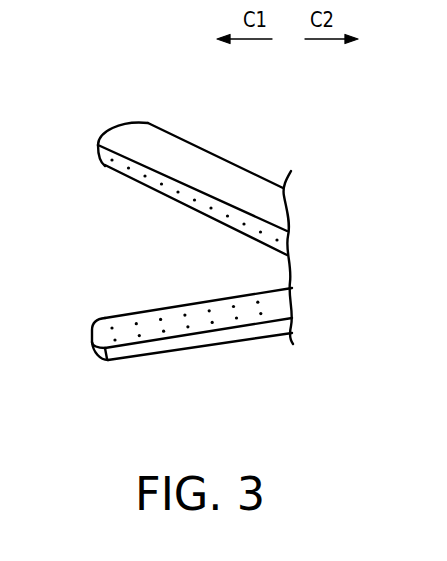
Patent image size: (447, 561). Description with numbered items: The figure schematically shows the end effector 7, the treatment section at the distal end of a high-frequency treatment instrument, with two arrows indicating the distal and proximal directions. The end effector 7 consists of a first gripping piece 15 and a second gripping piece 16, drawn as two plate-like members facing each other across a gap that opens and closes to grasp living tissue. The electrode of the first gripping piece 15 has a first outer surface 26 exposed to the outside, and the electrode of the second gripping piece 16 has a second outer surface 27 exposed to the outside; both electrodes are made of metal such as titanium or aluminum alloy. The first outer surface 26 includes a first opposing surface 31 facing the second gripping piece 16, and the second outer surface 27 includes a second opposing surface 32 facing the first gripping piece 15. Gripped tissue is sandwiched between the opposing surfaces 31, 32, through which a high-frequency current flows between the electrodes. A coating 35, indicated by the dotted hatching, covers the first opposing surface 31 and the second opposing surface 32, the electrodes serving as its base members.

The end effector 7 is at (78, 123).
The first gripping piece 15 is at (221, 333).
The second gripping piece 16 is at (192, 166).
The first outer surface 26 is at (147, 354).
The second outer surface 27 is at (147, 143).
The first opposing surface 31 is at (149, 320).
The second opposing surface 32 is at (172, 183).
The coating 35 is at (212, 207).